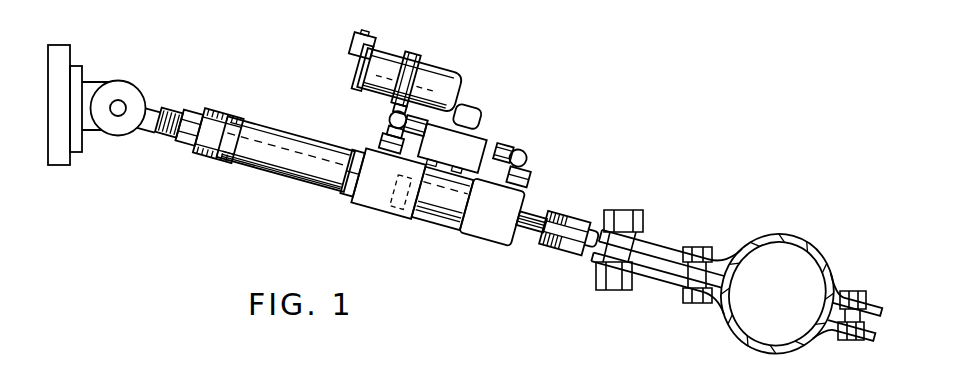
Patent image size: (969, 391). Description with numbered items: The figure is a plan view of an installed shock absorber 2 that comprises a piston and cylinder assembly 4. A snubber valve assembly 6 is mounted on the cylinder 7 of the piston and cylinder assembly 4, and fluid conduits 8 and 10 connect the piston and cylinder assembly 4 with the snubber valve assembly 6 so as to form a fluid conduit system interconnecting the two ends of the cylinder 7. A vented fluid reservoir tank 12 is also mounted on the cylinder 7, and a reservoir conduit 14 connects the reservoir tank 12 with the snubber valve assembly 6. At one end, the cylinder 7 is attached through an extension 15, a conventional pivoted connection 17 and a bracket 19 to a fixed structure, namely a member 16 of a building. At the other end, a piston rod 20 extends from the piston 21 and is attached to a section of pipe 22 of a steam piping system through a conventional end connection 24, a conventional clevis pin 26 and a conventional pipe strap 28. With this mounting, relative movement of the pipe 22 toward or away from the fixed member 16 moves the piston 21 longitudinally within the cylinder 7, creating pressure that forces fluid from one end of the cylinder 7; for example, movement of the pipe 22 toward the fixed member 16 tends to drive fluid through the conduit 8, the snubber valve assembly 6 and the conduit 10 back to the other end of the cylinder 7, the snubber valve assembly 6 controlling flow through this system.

The shock absorber 2 is at (506, 35).
The piston and cylinder assembly 4 is at (461, 219).
The snubber valve assembly 6 is at (488, 137).
The cylinder 7 is at (440, 226).
The fluid conduit 8 is at (386, 118).
The fluid conduit 10 is at (530, 155).
The vented fluid reservoir tank 12 is at (360, 77).
The reservoir conduit 14 is at (473, 107).
The extension 15 is at (288, 183).
The member 16 is at (58, 167).
The pivoted connection 17 is at (126, 82).
The bracket 19 is at (77, 153).
The piston rod 20 is at (536, 210).
The piston 21 is at (393, 213).
The section of pipe 22 is at (807, 347).
The end connection 24 is at (560, 250).
The clevis pin 26 is at (605, 290).
The pipe strap 28 is at (793, 233).